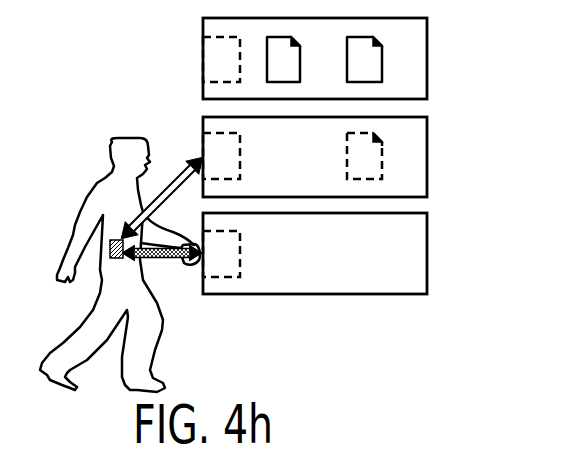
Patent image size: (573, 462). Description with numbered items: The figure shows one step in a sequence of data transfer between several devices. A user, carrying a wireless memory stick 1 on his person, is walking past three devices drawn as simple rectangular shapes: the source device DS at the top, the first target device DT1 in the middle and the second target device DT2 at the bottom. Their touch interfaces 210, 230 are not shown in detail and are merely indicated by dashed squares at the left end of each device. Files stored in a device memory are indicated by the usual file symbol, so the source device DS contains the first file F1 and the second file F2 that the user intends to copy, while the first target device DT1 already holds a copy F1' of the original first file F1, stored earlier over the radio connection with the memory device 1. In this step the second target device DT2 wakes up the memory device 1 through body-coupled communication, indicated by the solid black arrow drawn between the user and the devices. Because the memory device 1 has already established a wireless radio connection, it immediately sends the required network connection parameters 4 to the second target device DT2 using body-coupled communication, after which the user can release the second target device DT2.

The wireless memory stick 1 is at (100, 277).
The network connection parameters 4 is at (182, 262).
The touch interface 210 is at (208, 60).
The touch interface 230 is at (222, 133).
The first file F1 is at (223, 128).
The second file F2 is at (382, 68).
The copy of the first file F1' is at (382, 146).
The source device DS is at (427, 75).
The first target device DT1 is at (427, 166).
The second target device DT2 is at (427, 265).